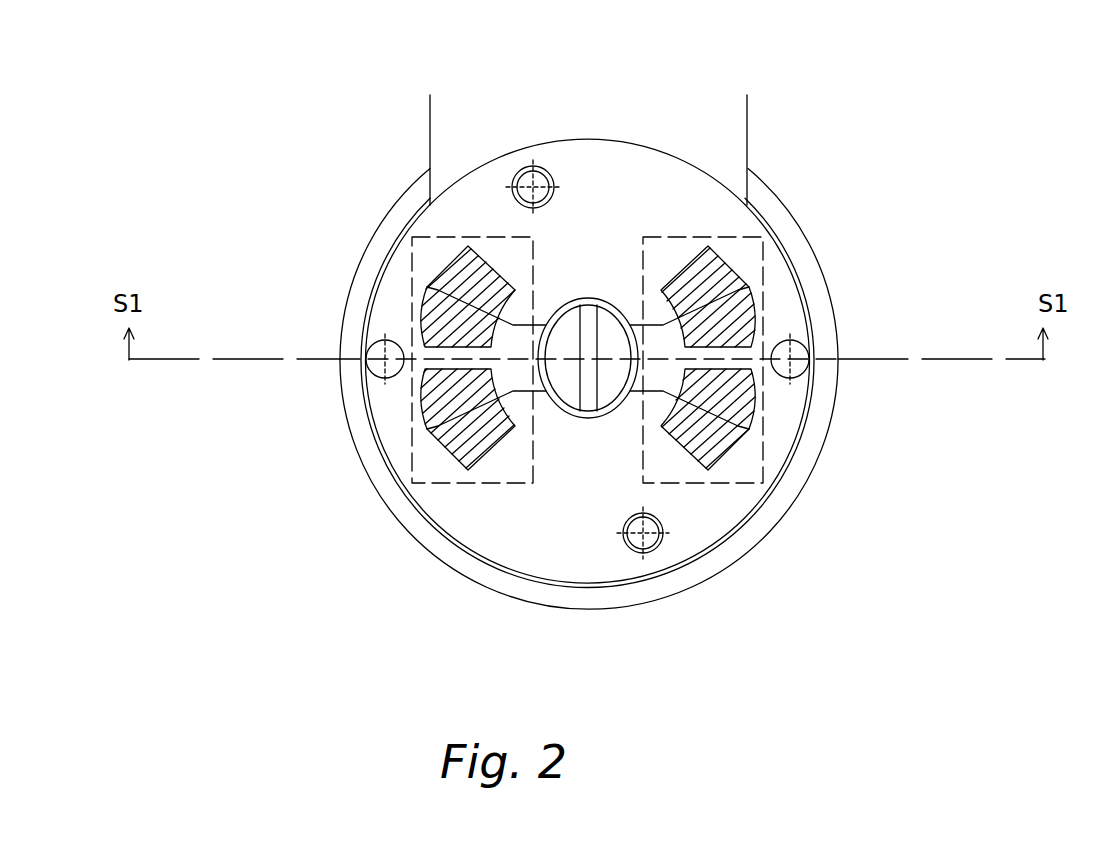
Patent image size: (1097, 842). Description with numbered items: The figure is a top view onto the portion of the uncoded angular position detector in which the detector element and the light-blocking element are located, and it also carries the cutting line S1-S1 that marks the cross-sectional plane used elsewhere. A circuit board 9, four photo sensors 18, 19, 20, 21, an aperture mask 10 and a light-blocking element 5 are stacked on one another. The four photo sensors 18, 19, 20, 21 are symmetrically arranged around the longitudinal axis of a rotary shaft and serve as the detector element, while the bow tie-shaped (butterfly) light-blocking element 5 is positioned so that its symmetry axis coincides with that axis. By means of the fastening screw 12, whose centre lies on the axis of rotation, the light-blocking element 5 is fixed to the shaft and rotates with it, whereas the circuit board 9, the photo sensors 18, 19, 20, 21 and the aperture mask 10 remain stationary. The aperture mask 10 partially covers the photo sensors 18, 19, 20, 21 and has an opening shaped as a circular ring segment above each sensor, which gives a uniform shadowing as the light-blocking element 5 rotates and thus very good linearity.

The light-blocking element 5 is at (753, 306).
The circuit board 9 is at (713, 127).
The aperture mask 10 is at (692, 512).
The fastening screw 12 is at (604, 316).
The photo sensor 18 is at (715, 275).
The photo sensor 19 is at (705, 448).
The photo sensor 20 is at (458, 272).
The photo sensor 21 is at (462, 425).